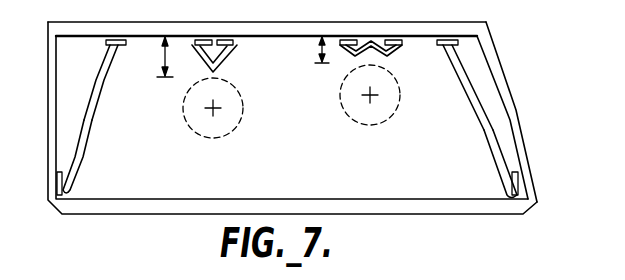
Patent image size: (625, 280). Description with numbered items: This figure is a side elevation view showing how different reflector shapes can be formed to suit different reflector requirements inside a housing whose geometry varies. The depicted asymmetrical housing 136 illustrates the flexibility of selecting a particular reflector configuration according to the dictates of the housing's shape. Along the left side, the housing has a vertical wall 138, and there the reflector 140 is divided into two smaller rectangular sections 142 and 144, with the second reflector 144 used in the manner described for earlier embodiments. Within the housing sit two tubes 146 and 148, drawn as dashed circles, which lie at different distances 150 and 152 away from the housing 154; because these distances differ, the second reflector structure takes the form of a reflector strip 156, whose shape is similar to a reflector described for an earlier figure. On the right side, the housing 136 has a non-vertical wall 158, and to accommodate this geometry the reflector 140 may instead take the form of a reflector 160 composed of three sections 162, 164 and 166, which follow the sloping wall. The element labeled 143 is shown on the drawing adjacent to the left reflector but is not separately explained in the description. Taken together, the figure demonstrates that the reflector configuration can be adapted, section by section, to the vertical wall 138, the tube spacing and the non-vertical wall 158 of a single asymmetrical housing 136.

The asymmetrical housing 136 is at (308, 107).
The vertical wall 138 is at (61, 62).
The reflector 140 is at (109, 117).
The rectangular section 142 is at (78, 157).
The upper leg of left spring clip 143 is at (108, 80).
The second reflector 144 is at (230, 60).
The tube 146 is at (234, 129).
The tube 148 is at (370, 125).
The distance 150 is at (163, 58).
The distance 152 is at (318, 48).
The housing 154 is at (245, 32).
The reflector strip 156 is at (397, 49).
The non-vertical wall 158 is at (505, 90).
The reflector 160 is at (462, 119).
The section 162 is at (462, 77).
The section 164 is at (483, 120).
The section 166 is at (500, 157).